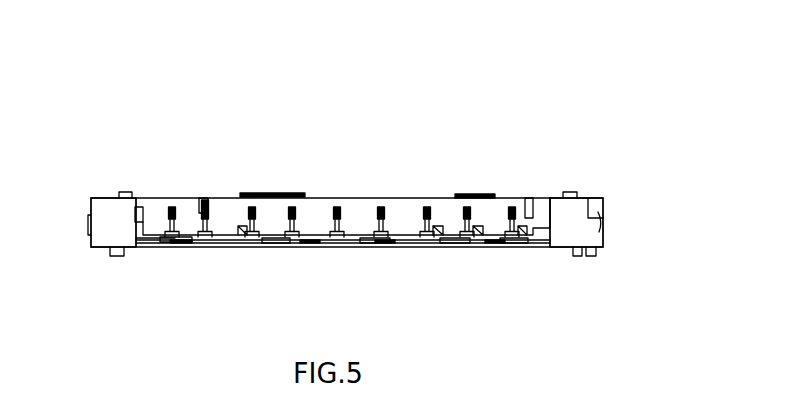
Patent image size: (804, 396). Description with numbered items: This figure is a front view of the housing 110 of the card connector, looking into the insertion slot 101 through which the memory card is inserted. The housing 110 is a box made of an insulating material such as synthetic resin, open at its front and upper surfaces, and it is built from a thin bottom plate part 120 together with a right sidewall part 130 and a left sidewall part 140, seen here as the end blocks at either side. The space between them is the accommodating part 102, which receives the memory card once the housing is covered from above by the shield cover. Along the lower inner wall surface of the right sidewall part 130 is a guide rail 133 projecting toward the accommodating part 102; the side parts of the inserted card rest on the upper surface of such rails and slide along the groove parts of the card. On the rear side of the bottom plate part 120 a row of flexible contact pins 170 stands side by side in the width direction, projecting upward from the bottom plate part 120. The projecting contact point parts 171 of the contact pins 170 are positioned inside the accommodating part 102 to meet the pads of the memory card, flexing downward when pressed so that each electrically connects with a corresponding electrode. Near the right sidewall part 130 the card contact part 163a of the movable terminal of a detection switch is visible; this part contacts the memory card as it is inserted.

The insertion slot 101 is at (452, 208).
The accommodating part 102 is at (402, 219).
The housing 110 is at (604, 204).
The bottom plate part 120 is at (463, 242).
The right sidewall part 130 is at (114, 207).
The guide rail 133 is at (138, 236).
The left sidewall part 140 is at (563, 217).
The card contact part 163a is at (141, 213).
The contact pins 170 is at (390, 223).
The contact point parts 171 is at (336, 216).